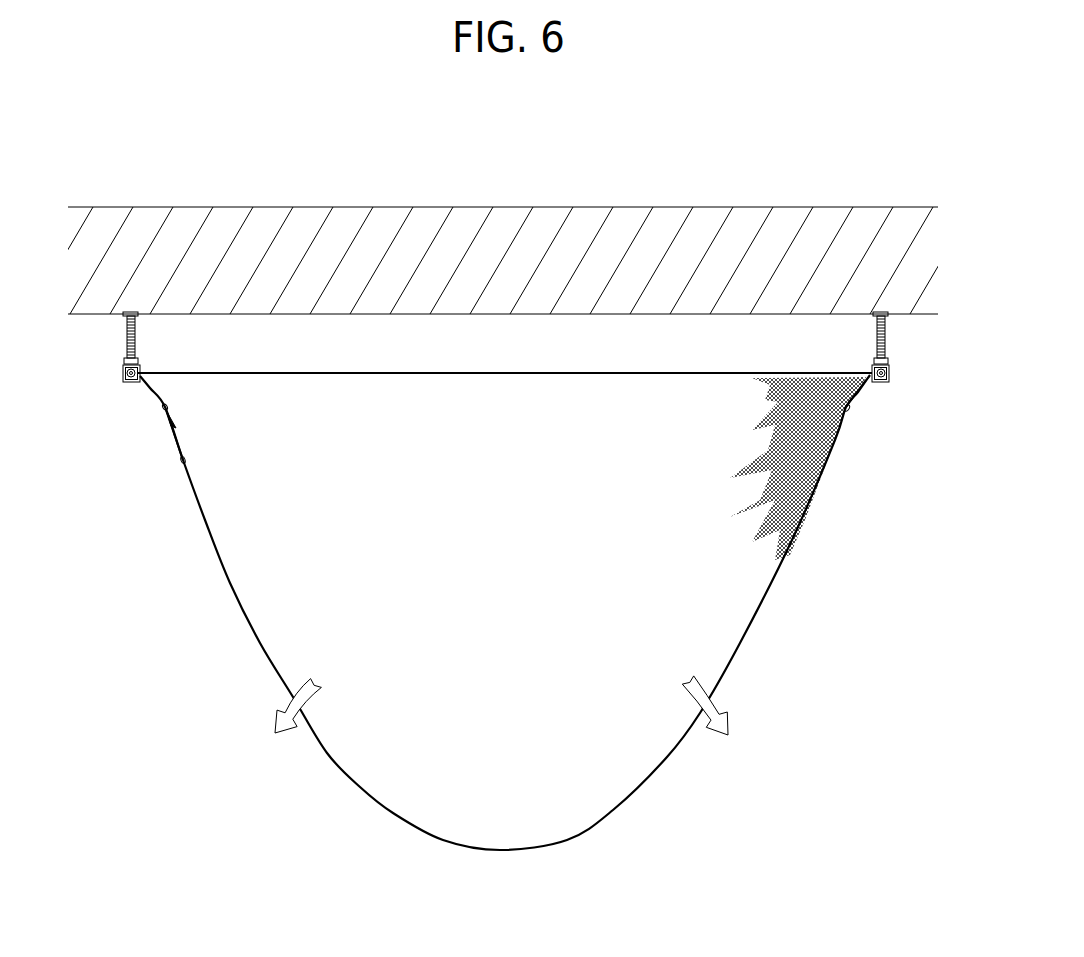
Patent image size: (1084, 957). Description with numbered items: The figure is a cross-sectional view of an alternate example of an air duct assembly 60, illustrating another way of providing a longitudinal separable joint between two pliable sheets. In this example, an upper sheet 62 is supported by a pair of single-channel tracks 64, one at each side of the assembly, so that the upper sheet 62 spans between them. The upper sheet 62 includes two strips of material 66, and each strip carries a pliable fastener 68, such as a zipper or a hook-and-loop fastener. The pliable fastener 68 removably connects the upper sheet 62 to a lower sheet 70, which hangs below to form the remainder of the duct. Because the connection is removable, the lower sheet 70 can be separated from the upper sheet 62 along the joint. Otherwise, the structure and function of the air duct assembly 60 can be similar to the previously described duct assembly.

The air duct assembly 60 is at (295, 840).
The upper sheet 62 is at (537, 372).
The single-channel tracks 64 is at (122, 370).
The strips of material 66 is at (160, 397).
The pliable fastener 68 is at (170, 407).
The lower sheet 70 is at (612, 813).